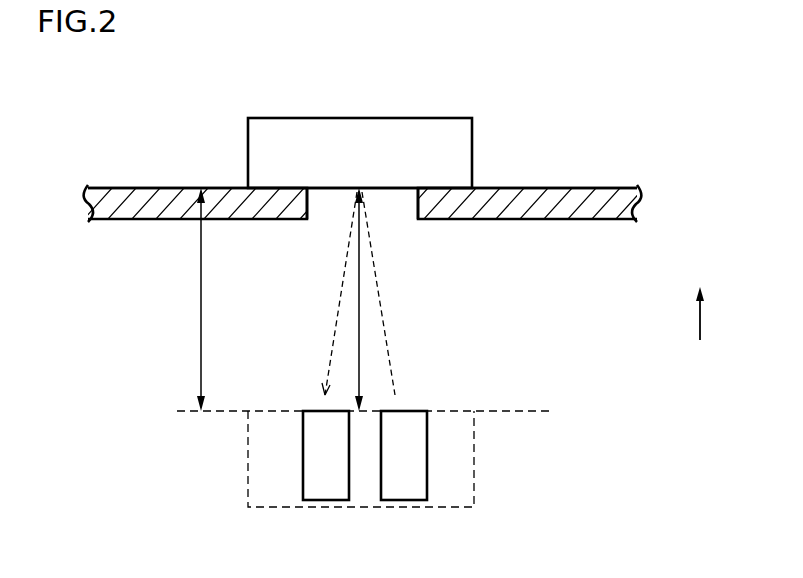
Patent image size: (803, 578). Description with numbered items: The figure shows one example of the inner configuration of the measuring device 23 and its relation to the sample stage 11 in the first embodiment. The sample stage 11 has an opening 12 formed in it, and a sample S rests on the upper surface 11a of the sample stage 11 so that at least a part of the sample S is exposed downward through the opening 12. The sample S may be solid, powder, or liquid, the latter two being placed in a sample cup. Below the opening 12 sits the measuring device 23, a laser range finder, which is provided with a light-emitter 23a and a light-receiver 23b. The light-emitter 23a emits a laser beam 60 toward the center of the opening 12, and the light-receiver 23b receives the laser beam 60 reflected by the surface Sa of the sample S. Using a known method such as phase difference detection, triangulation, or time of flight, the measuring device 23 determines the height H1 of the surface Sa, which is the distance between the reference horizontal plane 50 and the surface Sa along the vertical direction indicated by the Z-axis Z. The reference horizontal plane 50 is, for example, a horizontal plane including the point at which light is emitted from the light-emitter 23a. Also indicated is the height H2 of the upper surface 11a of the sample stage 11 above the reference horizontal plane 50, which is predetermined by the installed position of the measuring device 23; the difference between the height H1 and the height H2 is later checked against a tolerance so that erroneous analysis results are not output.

The sample S is at (449, 130).
The surface of the sample Sa is at (373, 191).
The sample stage 11 is at (606, 212).
The upper surface of the sample stage 11a is at (573, 188).
The opening 12 is at (418, 219).
The measuring device 23 is at (474, 450).
The light-emitter 23a is at (402, 490).
The light-receiver 23b is at (325, 490).
The reference horizontal plane 50 is at (519, 410).
The laser beam 60 is at (388, 354).
The height of the surface of the sample H1 is at (358, 306).
The height of the upper surface of the sample stage H2 is at (200, 306).
The Z-axis Z is at (713, 313).